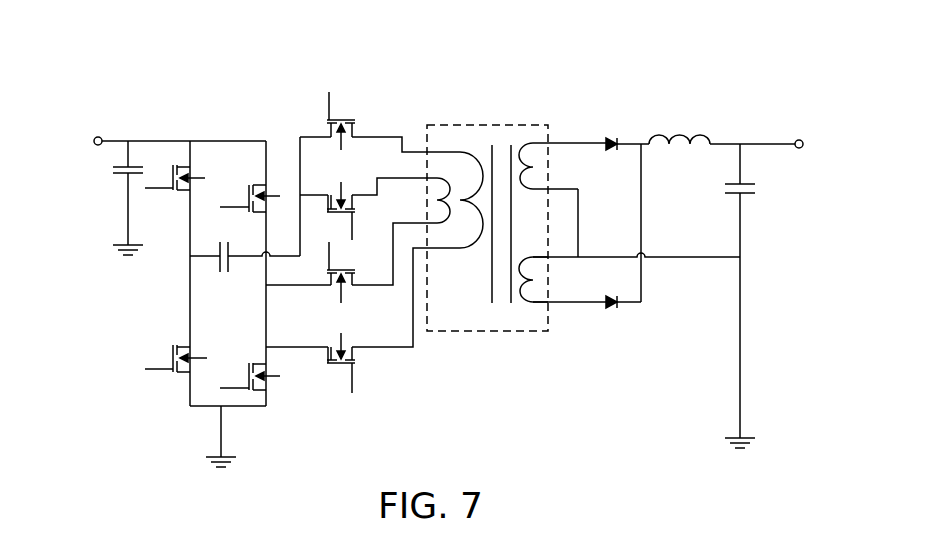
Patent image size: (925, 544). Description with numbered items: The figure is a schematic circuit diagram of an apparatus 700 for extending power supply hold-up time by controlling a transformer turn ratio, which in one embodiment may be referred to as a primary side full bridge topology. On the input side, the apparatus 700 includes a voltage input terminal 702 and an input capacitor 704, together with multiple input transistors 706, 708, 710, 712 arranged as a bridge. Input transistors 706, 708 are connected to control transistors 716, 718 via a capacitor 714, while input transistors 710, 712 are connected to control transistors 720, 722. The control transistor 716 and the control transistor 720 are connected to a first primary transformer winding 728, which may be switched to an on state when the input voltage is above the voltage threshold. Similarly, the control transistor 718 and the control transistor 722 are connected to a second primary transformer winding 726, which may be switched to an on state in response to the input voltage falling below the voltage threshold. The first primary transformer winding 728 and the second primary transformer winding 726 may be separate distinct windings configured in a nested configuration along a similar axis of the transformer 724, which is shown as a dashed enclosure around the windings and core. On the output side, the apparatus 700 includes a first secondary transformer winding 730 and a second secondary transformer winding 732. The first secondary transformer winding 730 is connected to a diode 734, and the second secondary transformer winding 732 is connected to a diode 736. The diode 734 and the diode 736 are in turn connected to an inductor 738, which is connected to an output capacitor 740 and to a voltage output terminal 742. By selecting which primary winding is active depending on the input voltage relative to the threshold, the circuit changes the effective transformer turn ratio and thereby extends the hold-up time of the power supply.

The apparatus 700 is at (90, 71).
The voltage input terminal 702 is at (96, 145).
The input capacitor 704 is at (117, 172).
The input transistor 706 is at (182, 165).
The input transistor 708 is at (173, 375).
The input transistor 710 is at (257, 185).
The input transistor 712 is at (258, 387).
The capacitor 714 is at (222, 272).
The control transistor 716 is at (352, 122).
The control transistor 718 is at (352, 208).
The control transistor 720 is at (353, 365).
The control transistor 722 is at (342, 302).
The transformer 724 is at (488, 332).
The second primary transformer winding 726 is at (461, 152).
The first primary transformer winding 728 is at (455, 250).
The first secondary transformer winding 730 is at (537, 143).
The second secondary transformer winding 732 is at (532, 303).
The diode 734 is at (610, 146).
The diode 736 is at (612, 306).
The inductor 738 is at (692, 142).
The output capacitor 740 is at (752, 196).
The voltage output terminal 742 is at (801, 148).